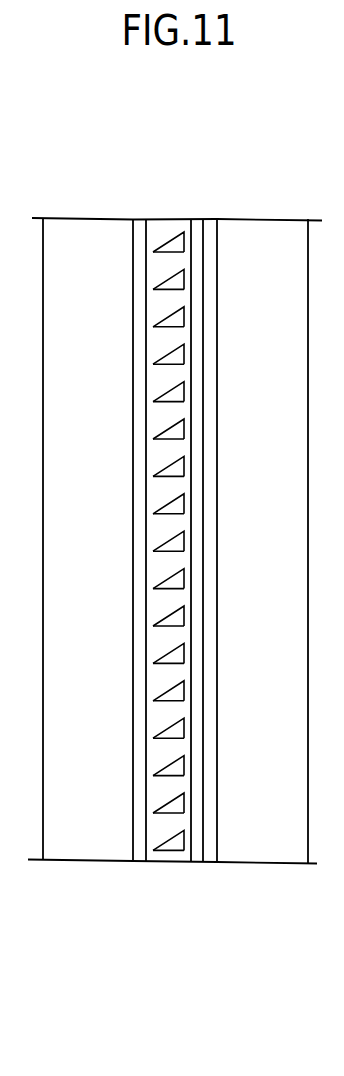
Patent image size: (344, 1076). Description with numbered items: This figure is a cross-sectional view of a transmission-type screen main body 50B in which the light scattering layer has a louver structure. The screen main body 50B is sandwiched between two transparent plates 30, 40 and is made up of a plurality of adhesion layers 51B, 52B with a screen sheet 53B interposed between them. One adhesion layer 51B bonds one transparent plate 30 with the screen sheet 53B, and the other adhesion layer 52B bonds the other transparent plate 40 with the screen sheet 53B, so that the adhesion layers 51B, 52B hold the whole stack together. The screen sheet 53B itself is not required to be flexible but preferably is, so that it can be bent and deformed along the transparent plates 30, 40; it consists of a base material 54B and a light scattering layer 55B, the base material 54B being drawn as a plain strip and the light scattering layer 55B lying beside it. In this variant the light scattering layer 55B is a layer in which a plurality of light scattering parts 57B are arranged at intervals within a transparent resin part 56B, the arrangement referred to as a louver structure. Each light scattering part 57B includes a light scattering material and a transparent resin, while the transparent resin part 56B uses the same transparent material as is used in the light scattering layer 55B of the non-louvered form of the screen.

The transparent plate 30 is at (88, 228).
The transparent plate 40 is at (263, 228).
The screen main body 50B is at (100, 164).
The adhesion layer 51B is at (140, 232).
The adhesion layer 52B is at (212, 232).
The screen sheet 53B is at (148, 207).
The base material 54B is at (195, 852).
The light scattering layer 55B is at (89, 923).
The transparent resin part 56B is at (154, 856).
The light scattering part 57B is at (167, 845).